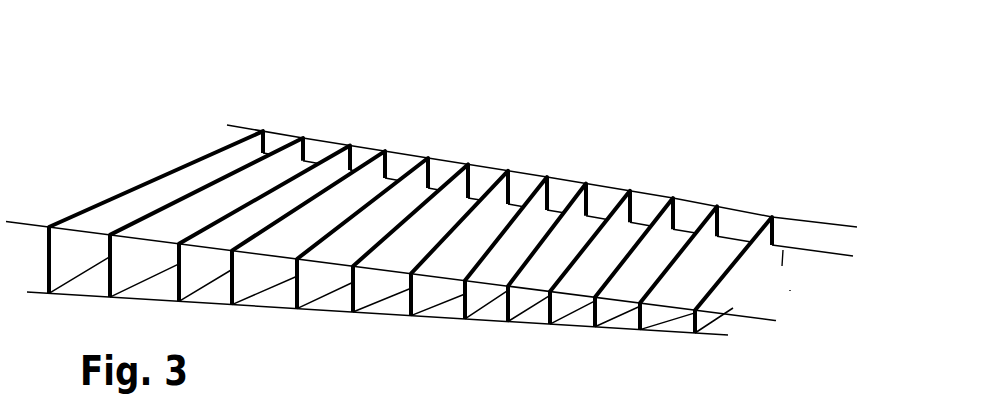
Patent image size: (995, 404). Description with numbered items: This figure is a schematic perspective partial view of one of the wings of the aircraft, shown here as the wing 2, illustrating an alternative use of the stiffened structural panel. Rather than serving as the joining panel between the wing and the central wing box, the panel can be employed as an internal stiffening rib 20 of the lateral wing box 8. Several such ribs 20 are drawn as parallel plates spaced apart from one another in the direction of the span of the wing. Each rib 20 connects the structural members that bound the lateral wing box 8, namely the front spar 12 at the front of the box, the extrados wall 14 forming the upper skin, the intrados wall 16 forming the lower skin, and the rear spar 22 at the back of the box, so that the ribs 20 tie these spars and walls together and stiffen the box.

The heat exchanger / cooling structure 2 is at (576, 130).
The lateral wing box 8 is at (816, 258).
The front spar 12 is at (685, 307).
The extrados wall 14 is at (783, 250).
The intrados wall 16 is at (790, 290).
The internal stiffening rib 20 is at (450, 182).
The rear spar 22 is at (688, 197).